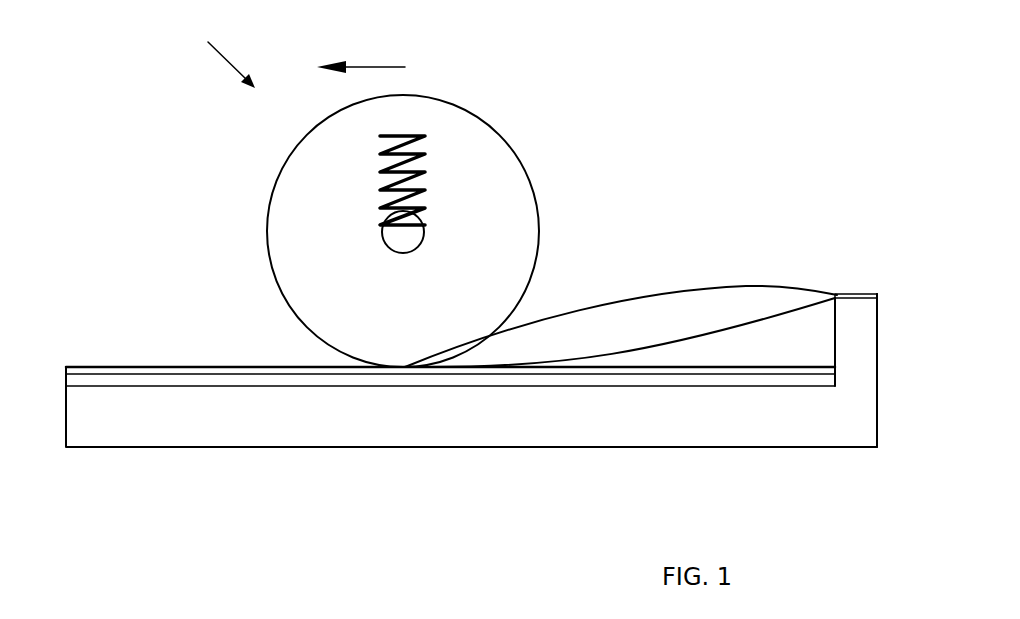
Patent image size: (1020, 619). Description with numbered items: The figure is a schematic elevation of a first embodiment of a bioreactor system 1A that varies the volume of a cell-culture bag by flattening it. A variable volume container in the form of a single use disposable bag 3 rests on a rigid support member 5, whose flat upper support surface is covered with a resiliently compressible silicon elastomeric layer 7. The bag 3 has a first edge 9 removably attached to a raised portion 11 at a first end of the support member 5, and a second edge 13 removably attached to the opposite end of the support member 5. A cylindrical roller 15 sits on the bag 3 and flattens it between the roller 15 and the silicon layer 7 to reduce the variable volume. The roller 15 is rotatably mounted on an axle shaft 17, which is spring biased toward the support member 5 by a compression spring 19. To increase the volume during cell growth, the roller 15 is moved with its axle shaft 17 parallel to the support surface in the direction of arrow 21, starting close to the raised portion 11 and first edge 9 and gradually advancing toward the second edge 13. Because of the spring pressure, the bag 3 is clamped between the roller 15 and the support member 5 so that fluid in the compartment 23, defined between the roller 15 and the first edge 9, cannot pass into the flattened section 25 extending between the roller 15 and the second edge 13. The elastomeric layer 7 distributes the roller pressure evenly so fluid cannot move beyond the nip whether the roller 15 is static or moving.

The bioreactor system 1A is at (216, 53).
The bag 3 is at (746, 285).
The support member 5 is at (663, 416).
The silicon elastomeric layer 7 is at (83, 379).
The first edge 9 is at (857, 297).
The raised portion 11 is at (859, 343).
The second edge 13 is at (72, 366).
The roller 15 is at (512, 230).
The axle shaft 17 is at (395, 232).
The compression spring 19 is at (382, 185).
The arrow 21 is at (378, 67).
The compartment 23 is at (637, 328).
The flattened section 25 is at (194, 366).